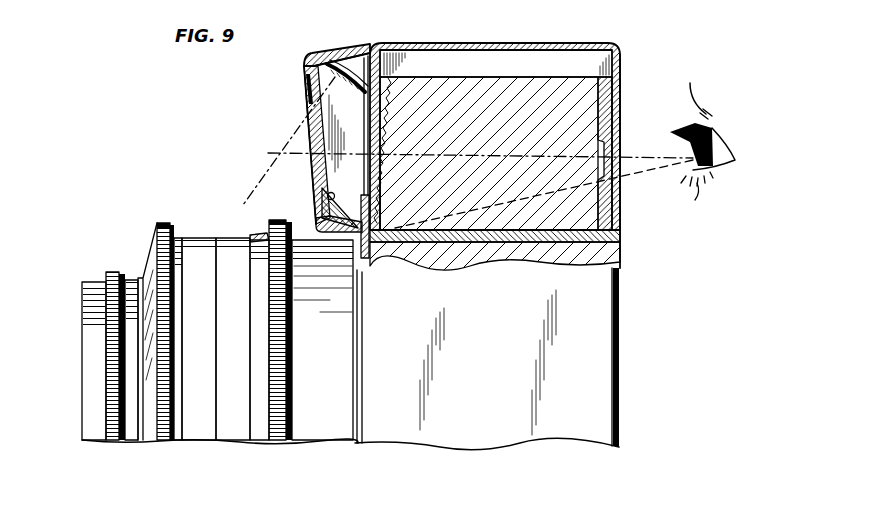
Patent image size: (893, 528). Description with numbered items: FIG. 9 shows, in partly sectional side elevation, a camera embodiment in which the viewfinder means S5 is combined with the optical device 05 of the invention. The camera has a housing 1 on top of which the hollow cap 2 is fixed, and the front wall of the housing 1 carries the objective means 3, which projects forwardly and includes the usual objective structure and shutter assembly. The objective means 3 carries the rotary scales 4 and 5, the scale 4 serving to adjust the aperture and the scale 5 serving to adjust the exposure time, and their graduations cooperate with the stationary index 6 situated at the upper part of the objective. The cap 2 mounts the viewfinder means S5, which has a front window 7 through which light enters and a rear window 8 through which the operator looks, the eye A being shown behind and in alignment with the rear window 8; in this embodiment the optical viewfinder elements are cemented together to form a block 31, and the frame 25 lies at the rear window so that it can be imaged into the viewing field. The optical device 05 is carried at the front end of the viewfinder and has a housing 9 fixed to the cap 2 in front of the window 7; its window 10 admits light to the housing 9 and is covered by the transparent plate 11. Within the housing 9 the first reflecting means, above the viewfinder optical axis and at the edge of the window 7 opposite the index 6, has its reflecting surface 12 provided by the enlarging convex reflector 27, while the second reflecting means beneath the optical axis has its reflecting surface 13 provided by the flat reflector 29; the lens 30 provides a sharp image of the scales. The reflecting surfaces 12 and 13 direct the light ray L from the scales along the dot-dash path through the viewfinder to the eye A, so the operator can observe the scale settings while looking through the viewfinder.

The housing 1 is at (591, 336).
The hollow enclosure or cap 2 is at (549, 49).
The objective means 3 is at (129, 450).
The rotary scale 4 is at (197, 441).
The rotary scale 5 is at (236, 441).
The stationary index 6 is at (262, 233).
The front window 7 is at (372, 112).
The rear window 8 is at (622, 118).
The housing 9 is at (336, 48).
The window 10 is at (306, 78).
The transparent plate 11 is at (318, 105).
The reflecting surface 12 is at (310, 97).
The reflecting surface 13 is at (318, 192).
The frame 25 is at (590, 160).
The convex reflector 27 is at (345, 70).
The flat reflector 29 is at (347, 241).
The lens 30 is at (388, 250).
The block 31 is at (567, 93).
The optical device 05 is at (336, 50).
The viewfinder means S5 is at (491, 64).
The light ray L is at (226, 226).
The eye A is at (690, 167).